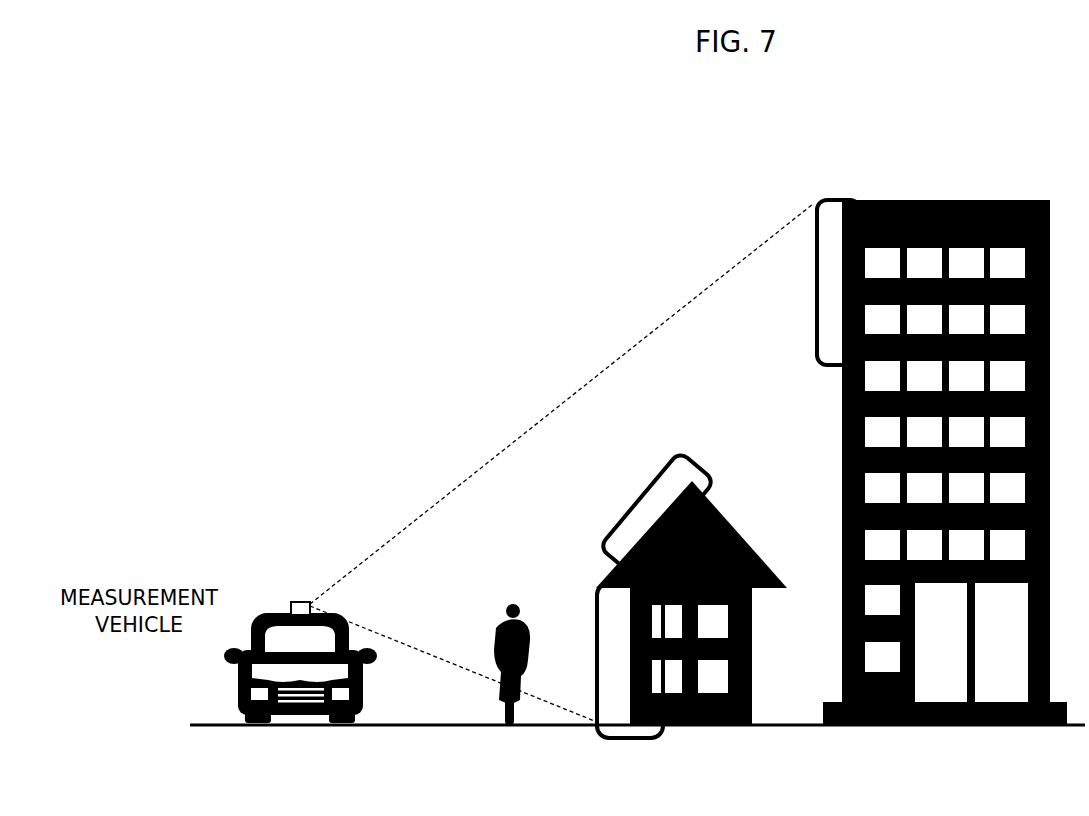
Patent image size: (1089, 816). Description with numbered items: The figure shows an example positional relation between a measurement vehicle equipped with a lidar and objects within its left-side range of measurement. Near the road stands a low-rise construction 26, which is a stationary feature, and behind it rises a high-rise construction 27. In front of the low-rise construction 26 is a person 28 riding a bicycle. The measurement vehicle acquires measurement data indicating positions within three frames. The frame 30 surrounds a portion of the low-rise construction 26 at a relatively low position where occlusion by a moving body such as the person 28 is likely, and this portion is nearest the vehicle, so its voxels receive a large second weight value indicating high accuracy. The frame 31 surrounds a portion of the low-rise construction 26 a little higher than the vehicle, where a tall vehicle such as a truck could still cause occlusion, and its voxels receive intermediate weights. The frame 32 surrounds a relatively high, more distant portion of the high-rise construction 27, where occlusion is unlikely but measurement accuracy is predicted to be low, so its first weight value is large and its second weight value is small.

The low-rise construction 26 is at (740, 532).
The high-rise construction 27 is at (958, 200).
The person 28 is at (523, 605).
The frame 30 is at (596, 677).
The frame 31 is at (665, 460).
The frame 32 is at (818, 263).